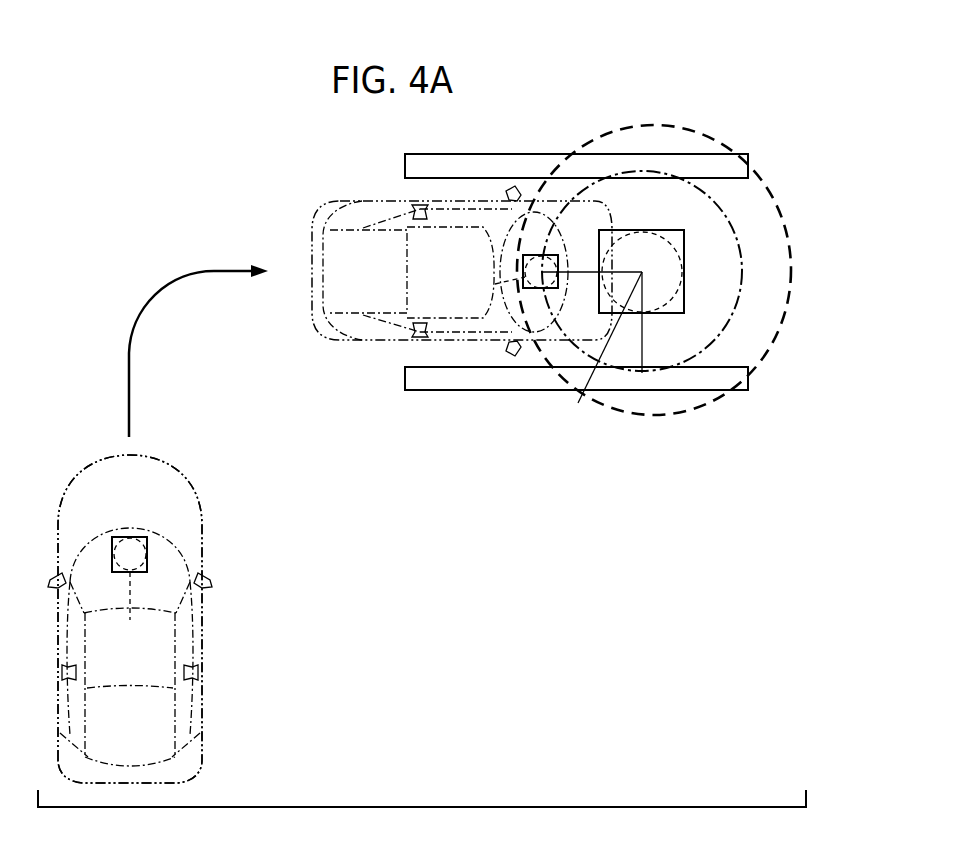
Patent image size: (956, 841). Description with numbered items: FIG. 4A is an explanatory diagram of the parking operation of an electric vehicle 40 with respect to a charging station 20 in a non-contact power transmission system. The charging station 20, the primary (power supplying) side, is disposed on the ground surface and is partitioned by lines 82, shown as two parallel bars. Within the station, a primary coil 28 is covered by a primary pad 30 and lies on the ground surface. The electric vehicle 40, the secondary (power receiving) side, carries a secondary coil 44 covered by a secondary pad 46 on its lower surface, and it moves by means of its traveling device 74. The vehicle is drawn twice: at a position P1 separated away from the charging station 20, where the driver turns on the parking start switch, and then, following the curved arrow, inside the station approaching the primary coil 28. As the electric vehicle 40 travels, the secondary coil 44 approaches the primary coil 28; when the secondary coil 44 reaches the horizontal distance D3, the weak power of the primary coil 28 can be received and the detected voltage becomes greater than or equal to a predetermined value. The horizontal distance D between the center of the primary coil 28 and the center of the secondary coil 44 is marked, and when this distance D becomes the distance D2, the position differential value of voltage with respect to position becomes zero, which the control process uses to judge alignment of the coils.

The charging station 20 is at (742, 332).
The primary coil 28 is at (675, 272).
The primary pad 30 is at (638, 268).
The electric vehicle 40 is at (348, 200).
The secondary coil 44 is at (495, 284).
The secondary pad 46 is at (523, 259).
The traveling device 74 is at (730, 215).
The lines 82 is at (496, 154).
The horizontal distance D is at (581, 270).
The distance D2 is at (642, 330).
The horizontal distance D3 is at (590, 373).
The position P1 is at (228, 635).